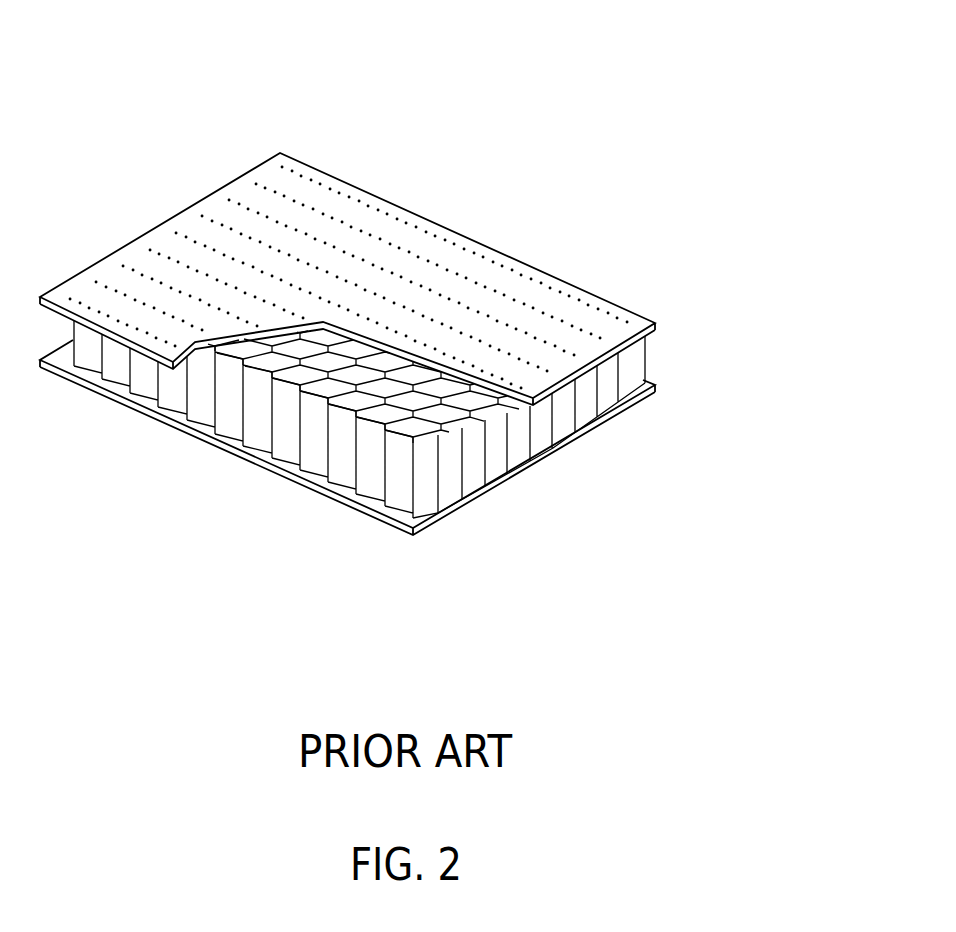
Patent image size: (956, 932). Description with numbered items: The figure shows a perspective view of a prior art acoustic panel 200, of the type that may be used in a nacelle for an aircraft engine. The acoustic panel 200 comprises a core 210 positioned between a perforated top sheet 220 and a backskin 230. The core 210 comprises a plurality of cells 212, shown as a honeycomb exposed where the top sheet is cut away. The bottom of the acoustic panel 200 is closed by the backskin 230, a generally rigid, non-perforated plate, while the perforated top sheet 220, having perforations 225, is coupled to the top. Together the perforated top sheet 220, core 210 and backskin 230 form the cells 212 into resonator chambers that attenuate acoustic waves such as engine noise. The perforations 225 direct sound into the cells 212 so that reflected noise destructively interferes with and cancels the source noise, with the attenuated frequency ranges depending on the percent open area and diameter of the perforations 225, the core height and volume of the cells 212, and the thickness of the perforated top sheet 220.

The acoustic panel 200 is at (168, 104).
The core 210 is at (700, 358).
The cells 212 is at (423, 478).
The perforated top sheet 220 is at (347, 254).
The perforations 225 is at (353, 230).
The backskin 230 is at (583, 440).